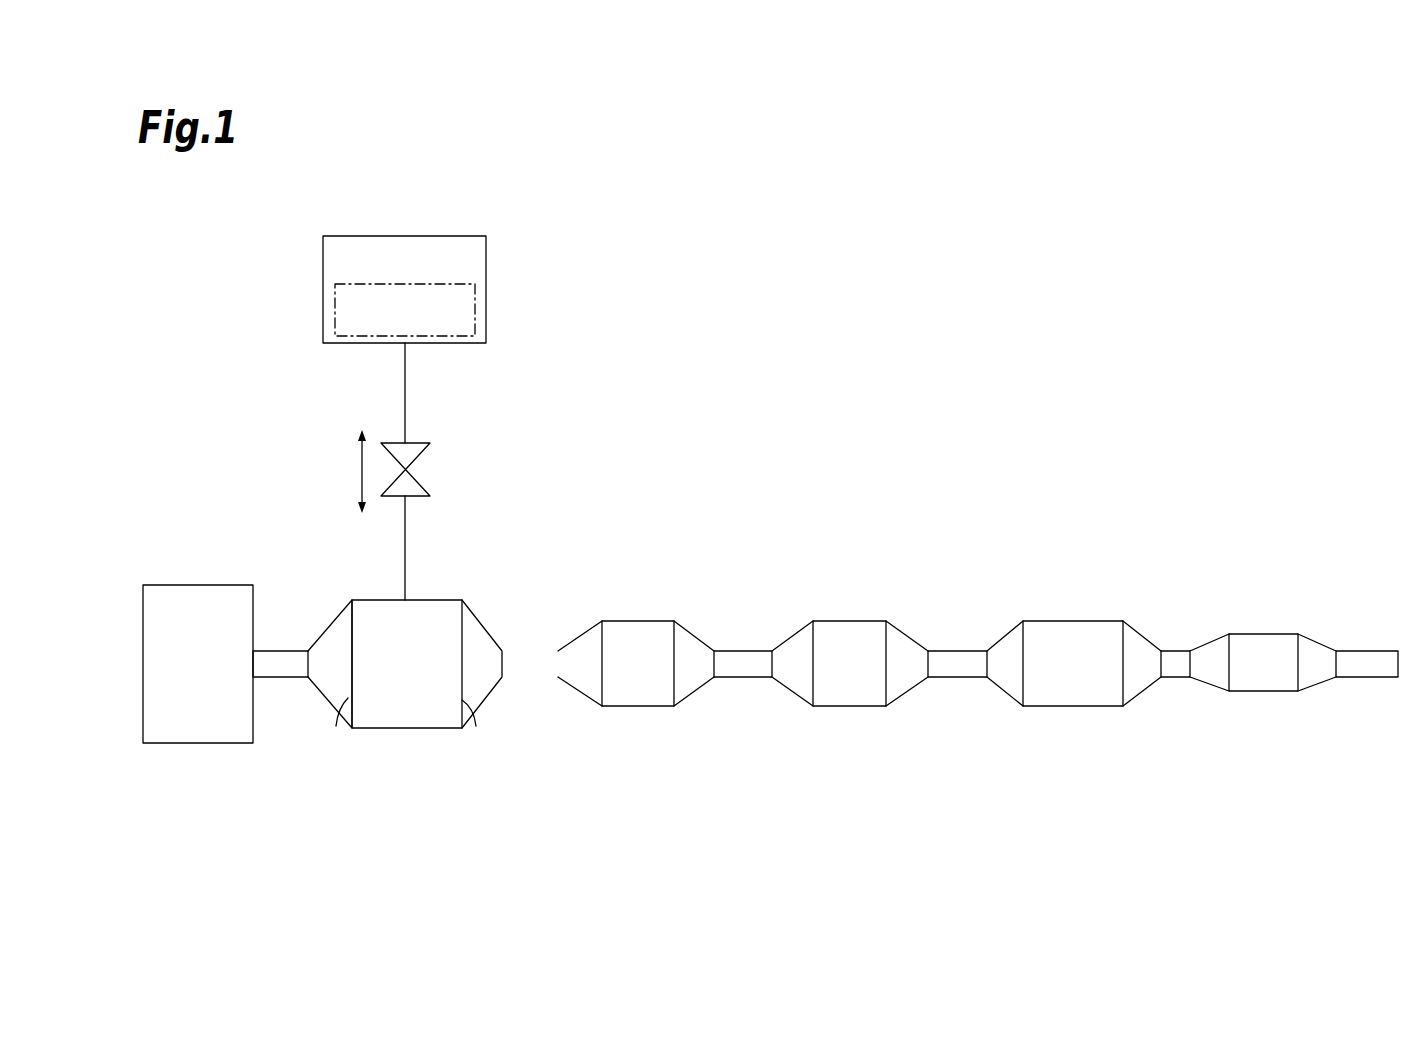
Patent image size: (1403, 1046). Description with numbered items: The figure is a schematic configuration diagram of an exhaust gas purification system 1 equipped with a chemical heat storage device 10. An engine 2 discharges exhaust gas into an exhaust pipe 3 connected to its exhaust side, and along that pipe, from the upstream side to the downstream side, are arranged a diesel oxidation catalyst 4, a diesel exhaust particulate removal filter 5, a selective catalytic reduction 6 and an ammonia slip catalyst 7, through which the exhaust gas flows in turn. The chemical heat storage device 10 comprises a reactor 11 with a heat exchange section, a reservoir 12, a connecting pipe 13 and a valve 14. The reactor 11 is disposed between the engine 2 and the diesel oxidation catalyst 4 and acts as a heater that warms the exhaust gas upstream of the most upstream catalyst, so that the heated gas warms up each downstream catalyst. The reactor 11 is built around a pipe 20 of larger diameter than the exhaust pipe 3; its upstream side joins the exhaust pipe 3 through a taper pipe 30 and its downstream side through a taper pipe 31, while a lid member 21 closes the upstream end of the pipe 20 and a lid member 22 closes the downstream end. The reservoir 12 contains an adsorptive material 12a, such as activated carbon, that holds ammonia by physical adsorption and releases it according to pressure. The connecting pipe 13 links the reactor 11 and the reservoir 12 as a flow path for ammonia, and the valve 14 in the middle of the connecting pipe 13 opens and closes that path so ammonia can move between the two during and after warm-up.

The exhaust gas purification system 1 is at (808, 357).
The engine 2 is at (198, 745).
The exhaust pipe 3 is at (280, 680).
The diesel oxidation catalyst 4 is at (638, 708).
The diesel exhaust particulate removal filter 5 is at (847, 708).
The selective catalytic reduction 6 is at (1072, 708).
The ammonia slip catalyst 7 is at (1262, 693).
The chemical heat storage device 10 is at (248, 263).
The reactor with heat exchange section 11 is at (442, 578).
The reservoir 12 is at (488, 280).
The adsorptive material 12a is at (335, 318).
The connecting pipe 13 is at (407, 387).
The valve 14 is at (420, 448).
The pipe 20 is at (403, 708).
The lid member 21 is at (336, 726).
The lid member 22 is at (476, 726).
The taper pipe 30 is at (327, 647).
The taper pipe 31 is at (483, 645).